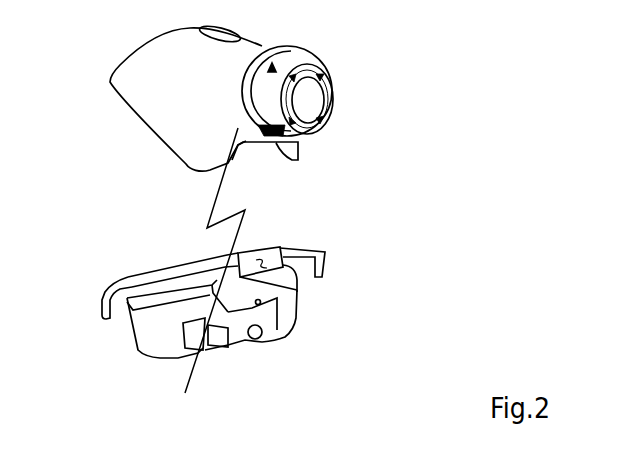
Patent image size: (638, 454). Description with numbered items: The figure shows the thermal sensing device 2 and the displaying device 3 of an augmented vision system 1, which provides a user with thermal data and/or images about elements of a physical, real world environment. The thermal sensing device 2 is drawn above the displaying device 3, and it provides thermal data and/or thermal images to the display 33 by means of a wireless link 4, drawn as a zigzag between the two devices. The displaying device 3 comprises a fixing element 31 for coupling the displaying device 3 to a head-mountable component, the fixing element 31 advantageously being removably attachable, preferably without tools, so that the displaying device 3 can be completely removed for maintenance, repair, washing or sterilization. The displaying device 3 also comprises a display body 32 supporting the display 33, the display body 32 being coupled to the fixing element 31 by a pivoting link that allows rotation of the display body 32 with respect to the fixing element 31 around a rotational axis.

The augmented vision system 1 is at (447, 107).
The thermal sensing device 2 is at (367, 110).
The displaying device 3 is at (367, 250).
The wireless link 4 is at (214, 203).
The fixing element 31 is at (105, 297).
The display body 32 is at (273, 290).
The display 33 is at (207, 332).